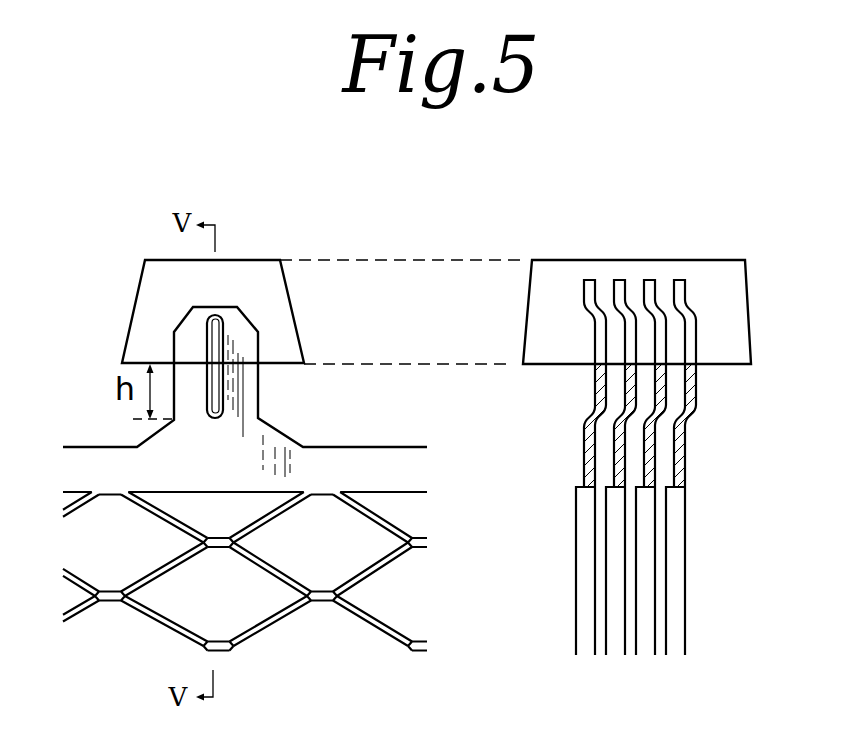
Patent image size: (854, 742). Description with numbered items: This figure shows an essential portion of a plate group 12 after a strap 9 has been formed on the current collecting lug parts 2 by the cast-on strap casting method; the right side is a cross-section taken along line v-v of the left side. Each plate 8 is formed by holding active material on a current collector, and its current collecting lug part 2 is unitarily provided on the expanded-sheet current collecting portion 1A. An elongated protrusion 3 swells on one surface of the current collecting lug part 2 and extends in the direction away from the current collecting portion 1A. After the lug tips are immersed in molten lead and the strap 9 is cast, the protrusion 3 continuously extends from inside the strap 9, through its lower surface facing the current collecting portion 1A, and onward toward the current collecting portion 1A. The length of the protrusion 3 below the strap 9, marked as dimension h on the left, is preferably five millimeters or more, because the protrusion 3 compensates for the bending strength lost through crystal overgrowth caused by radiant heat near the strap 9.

The current collecting portion 1A is at (392, 467).
The current collecting lug part 2 is at (258, 405).
The protrusion 3 is at (223, 387).
The plate 8 is at (413, 583).
The strap 9 is at (257, 258).
The plate group 12 is at (693, 480).